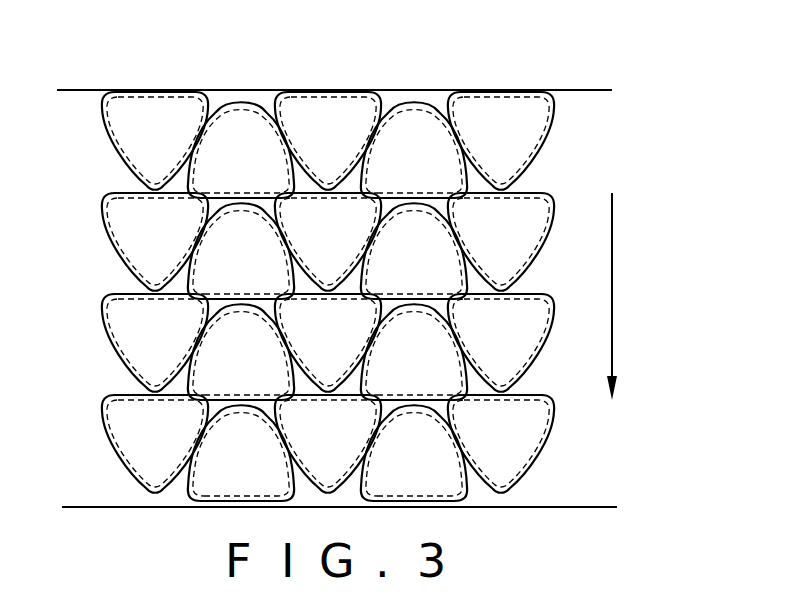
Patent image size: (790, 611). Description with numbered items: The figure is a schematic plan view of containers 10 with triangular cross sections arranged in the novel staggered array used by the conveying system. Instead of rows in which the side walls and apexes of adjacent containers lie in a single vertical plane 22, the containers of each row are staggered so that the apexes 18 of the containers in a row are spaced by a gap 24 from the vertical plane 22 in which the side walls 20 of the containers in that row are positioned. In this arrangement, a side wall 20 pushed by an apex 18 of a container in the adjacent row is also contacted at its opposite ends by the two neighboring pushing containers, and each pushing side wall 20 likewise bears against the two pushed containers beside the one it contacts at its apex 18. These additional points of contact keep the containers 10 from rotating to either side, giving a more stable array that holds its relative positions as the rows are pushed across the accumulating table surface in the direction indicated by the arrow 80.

The containers 10 is at (355, 58).
The apex 18 is at (240, 100).
The side wall 20 is at (156, 90).
The vertical plane 22 is at (89, 90).
The gap 24 is at (268, 94).
The arrow 80 is at (613, 290).